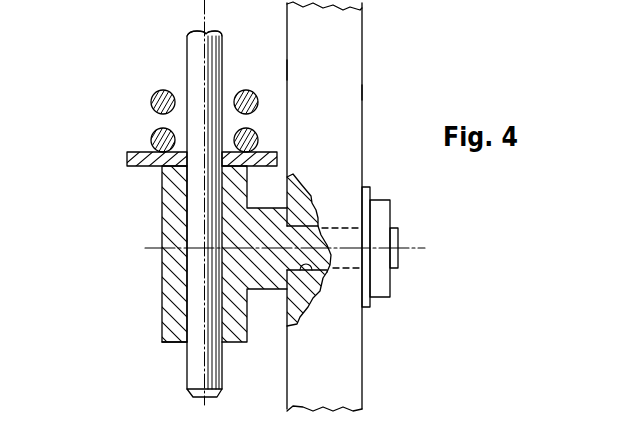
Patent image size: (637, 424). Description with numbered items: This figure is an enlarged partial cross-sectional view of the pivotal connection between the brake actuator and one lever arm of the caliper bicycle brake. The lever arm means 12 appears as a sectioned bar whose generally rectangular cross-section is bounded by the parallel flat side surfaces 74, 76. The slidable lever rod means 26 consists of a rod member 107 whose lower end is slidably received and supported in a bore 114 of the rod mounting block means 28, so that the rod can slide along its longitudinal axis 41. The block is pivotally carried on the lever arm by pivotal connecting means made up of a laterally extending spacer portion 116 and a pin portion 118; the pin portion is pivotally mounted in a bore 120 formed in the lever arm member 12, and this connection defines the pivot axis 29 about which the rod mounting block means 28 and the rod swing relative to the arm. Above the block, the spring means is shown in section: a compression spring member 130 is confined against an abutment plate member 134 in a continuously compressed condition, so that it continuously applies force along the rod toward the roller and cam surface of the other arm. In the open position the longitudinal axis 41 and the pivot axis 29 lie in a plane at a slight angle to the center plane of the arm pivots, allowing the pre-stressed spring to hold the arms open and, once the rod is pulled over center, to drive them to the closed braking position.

The lever arm means 12 is at (366, 42).
The slidable lever rod means 26 is at (188, 390).
The rod mounting block means 28 is at (156, 343).
The pivot axis 29 is at (146, 247).
The longitudinal axis 41 is at (206, 15).
The flat side surface 74 is at (286, 70).
The flat side surface 76 is at (363, 93).
The rod member 107 is at (188, 33).
The bore 114 is at (189, 279).
The laterally extending spacer portion 116 is at (263, 278).
The pin portion 118 is at (303, 233).
The bore 120 is at (313, 274).
The compression spring member 130 is at (151, 102).
The abutment plate member 134 is at (127, 155).